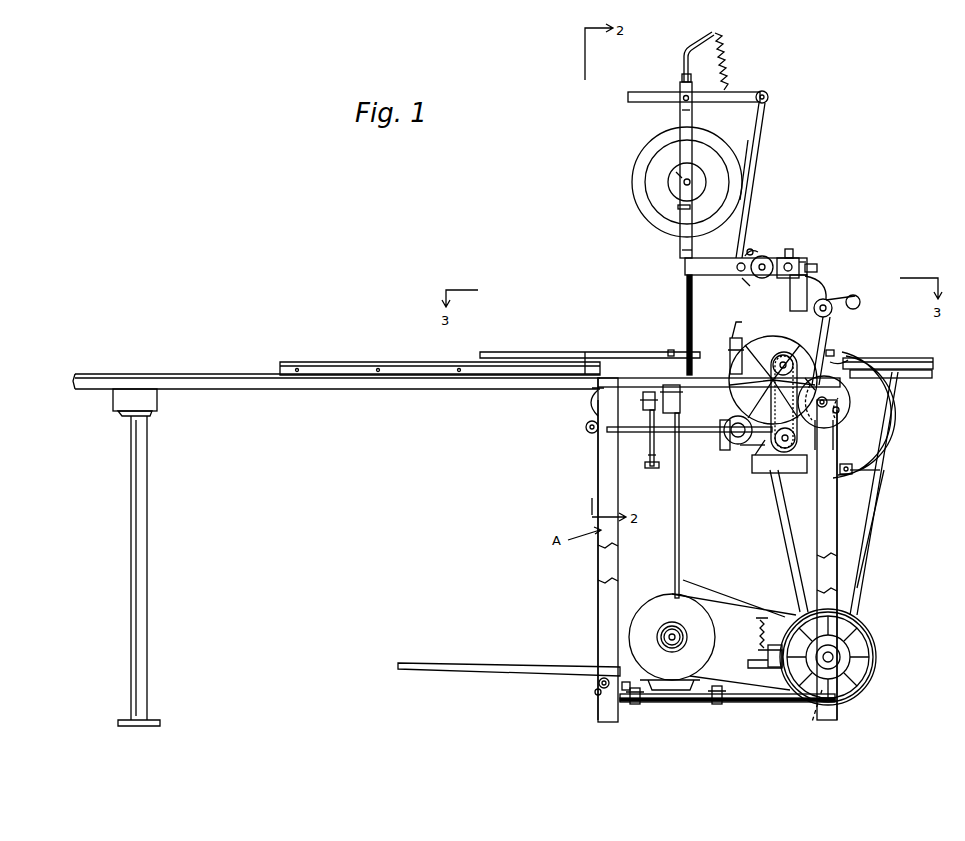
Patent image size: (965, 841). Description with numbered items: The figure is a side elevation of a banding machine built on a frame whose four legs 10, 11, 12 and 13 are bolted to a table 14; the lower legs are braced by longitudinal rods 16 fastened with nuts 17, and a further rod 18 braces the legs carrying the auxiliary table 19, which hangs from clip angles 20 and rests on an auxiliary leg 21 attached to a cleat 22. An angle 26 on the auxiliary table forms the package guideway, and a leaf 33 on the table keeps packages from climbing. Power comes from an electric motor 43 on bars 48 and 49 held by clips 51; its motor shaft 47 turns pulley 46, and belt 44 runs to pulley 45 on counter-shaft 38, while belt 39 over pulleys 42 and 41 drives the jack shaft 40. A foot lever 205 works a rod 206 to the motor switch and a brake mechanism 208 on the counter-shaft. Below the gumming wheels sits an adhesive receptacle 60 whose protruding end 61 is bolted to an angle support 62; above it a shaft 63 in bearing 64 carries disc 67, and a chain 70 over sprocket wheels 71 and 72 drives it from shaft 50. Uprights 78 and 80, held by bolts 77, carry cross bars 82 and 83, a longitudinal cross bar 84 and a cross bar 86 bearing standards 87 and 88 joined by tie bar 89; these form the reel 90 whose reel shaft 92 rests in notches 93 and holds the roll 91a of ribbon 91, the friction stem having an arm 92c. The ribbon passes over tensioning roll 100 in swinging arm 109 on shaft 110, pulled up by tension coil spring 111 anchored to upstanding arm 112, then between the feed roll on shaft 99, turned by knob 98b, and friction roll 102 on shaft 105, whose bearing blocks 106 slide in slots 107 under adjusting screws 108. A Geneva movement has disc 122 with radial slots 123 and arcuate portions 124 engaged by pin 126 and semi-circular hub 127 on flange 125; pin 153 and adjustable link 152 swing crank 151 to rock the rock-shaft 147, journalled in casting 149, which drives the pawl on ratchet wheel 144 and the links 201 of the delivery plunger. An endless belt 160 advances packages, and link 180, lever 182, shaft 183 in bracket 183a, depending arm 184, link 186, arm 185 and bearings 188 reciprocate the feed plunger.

The leg 10 is at (600, 458).
The leg 11 is at (825, 524).
The leg 12 is at (830, 570).
The leg 13 is at (606, 567).
The table 14 is at (622, 378).
The longitudinal rod 16 is at (690, 703).
The nut 17 is at (596, 695).
The rod 18 is at (598, 684).
The auxiliary table 19 is at (355, 390).
The clip angle 20 is at (592, 395).
The auxiliary leg 21 is at (148, 552).
The cleat 22 is at (150, 403).
The angle 26 is at (124, 373).
The leaf 33 is at (672, 350).
The counter-shaft 38 is at (840, 648).
The belt 39 is at (870, 528).
The jack shaft 40 is at (850, 405).
The pulley 41 is at (878, 470).
The pulley 42 is at (818, 715).
The electric motor 43 is at (661, 597).
The belt 44 is at (725, 616).
The pulley 45 is at (848, 692).
The pulley 46 is at (662, 633).
The motor shaft 47 is at (682, 637).
The bar 48 is at (646, 703).
The bar 49 is at (726, 703).
The shaft 50 is at (780, 358).
The clip 51 is at (626, 708).
The receptacle 60 is at (770, 485).
The protruding end 61 is at (850, 475).
The angle support 62 is at (848, 476).
The shaft 63 is at (780, 446).
The bearing 64 is at (800, 445).
The disc 67 is at (760, 460).
The chain 70 is at (770, 395).
The sprocket wheel 71 is at (768, 448).
The sprocket wheel 72 is at (796, 362).
The bolt 77 is at (668, 388).
The upright 78 is at (686, 300).
The upright 80 is at (806, 283).
The cross bar 82 is at (700, 278).
The cross bar 83 is at (820, 272).
The longitudinal cross bar 84 is at (716, 273).
The cross bar 86 is at (686, 252).
The standard 87 is at (690, 118).
The standard 88 is at (680, 110).
The tie bar 89 is at (682, 78).
The reel 90 is at (634, 182).
The ribbon 91 is at (752, 148).
The roll 91a is at (750, 150).
The reel shaft 92 is at (692, 182).
The arm 92c is at (680, 206).
The notch 93 is at (680, 180).
The knob 98b is at (756, 252).
The shaft 99 is at (766, 262).
The tensioning roll 100 is at (768, 92).
The friction roll 102 is at (794, 262).
The shaft 105 is at (792, 250).
The bearing block 106 is at (802, 262).
The slot 107 is at (760, 280).
The adjusting screw 108 is at (816, 266).
The swinging arm 109 is at (735, 92).
The shaft 110 is at (684, 96).
The tension coil spring 111 is at (726, 46).
The upstanding arm 112 is at (688, 48).
The disc 122 is at (836, 352).
The radial slot 123 is at (850, 358).
The arcuate portion 124 is at (815, 378).
The flange 125 is at (828, 402).
The pin 126 is at (886, 437).
The semi-circular hub 127 is at (822, 440).
The ratchet wheel 144 is at (752, 249).
The rock-shaft 147 is at (833, 302).
The casting 149 is at (860, 302).
The crank 151 is at (845, 298).
The adjustable link 152 is at (830, 335).
The pin 153 is at (840, 395).
The endless belt 160 is at (650, 422).
The link 180 is at (732, 345).
The lever 182 is at (738, 444).
The shaft 183 is at (692, 433).
The bracket 183a is at (720, 450).
The depending arm 184 is at (658, 468).
The arm 185 is at (586, 427).
The link 186 is at (650, 456).
The bearing 188 is at (648, 392).
The link 201 is at (888, 358).
The foot lever 205 is at (416, 672).
The rod 206 is at (681, 540).
The brake mechanism 208 is at (776, 640).